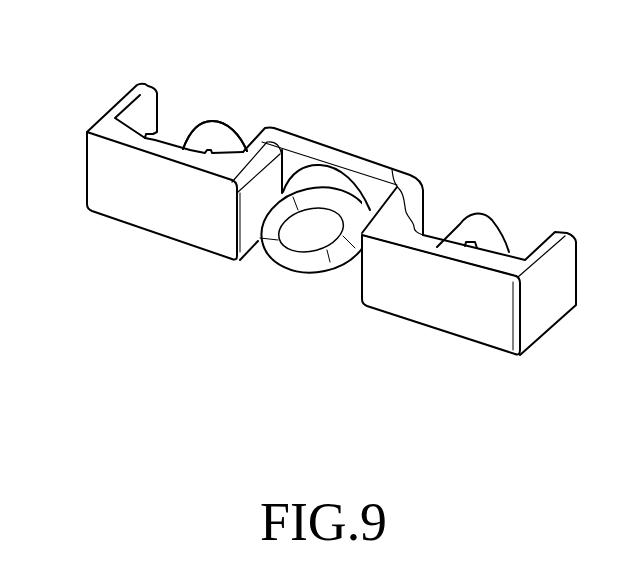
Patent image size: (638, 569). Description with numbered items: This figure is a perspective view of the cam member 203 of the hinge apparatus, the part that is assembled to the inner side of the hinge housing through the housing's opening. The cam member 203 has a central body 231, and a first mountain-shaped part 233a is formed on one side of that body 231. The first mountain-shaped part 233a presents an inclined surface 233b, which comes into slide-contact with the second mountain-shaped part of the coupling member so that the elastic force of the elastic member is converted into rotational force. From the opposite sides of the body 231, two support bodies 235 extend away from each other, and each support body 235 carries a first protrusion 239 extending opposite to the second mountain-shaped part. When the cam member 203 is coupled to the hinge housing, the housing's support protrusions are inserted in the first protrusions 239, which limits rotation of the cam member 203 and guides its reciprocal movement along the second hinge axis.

The cam member 203 is at (70, 64).
The body 231 is at (370, 163).
The first mountain-shaped part 233a is at (318, 178).
The inclined surface 233b is at (303, 257).
The support bodies 235 is at (153, 217).
The first protrusions 239 is at (222, 135).